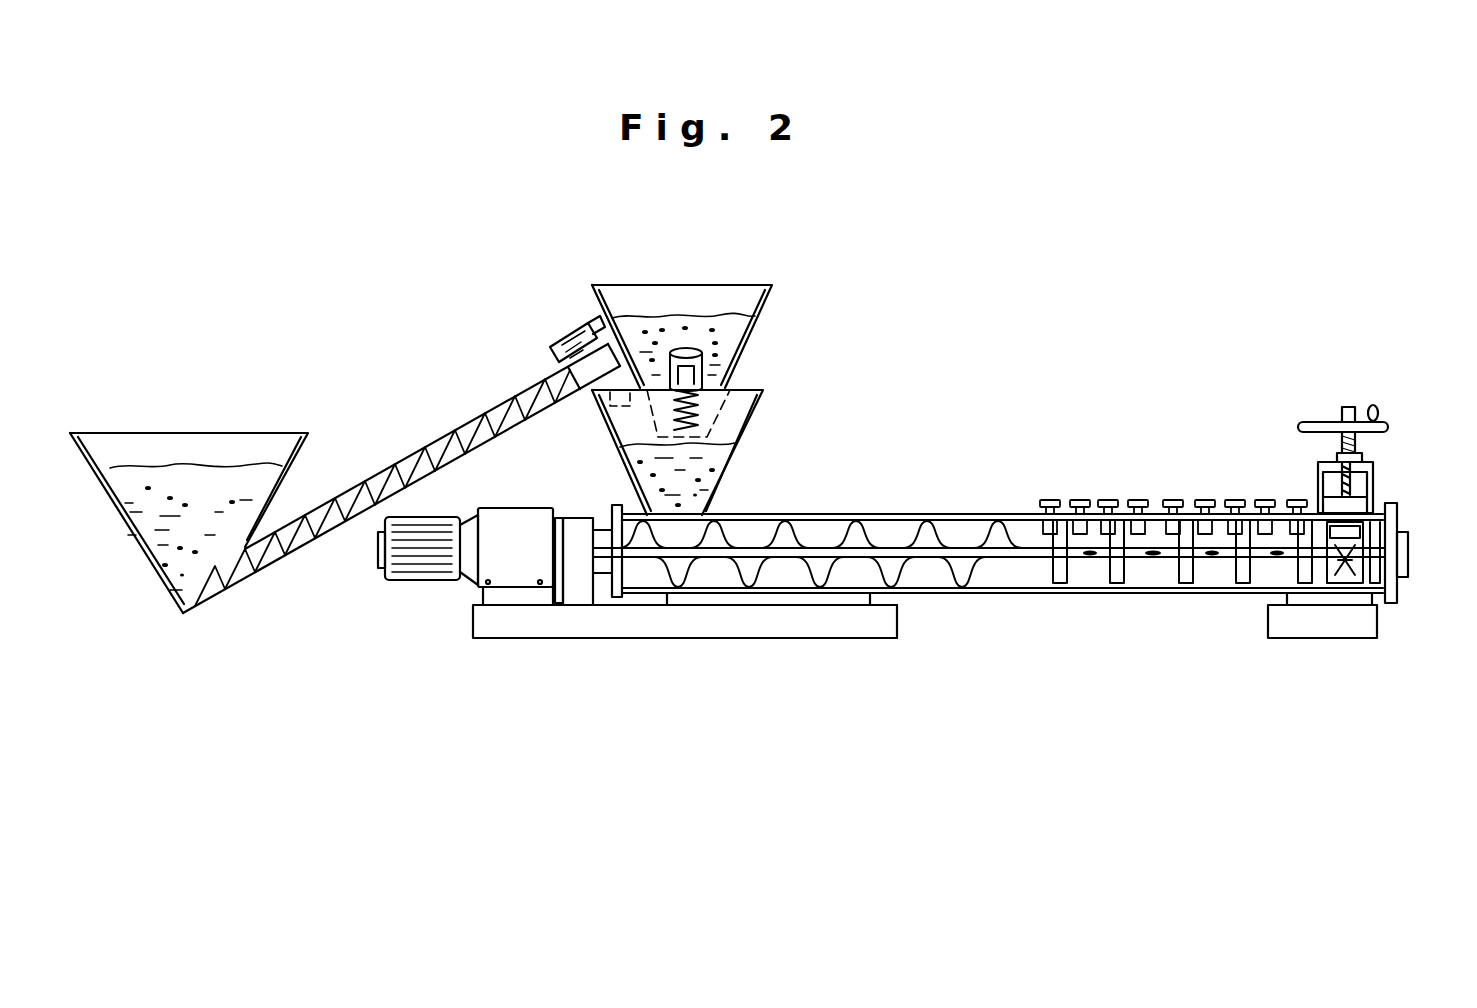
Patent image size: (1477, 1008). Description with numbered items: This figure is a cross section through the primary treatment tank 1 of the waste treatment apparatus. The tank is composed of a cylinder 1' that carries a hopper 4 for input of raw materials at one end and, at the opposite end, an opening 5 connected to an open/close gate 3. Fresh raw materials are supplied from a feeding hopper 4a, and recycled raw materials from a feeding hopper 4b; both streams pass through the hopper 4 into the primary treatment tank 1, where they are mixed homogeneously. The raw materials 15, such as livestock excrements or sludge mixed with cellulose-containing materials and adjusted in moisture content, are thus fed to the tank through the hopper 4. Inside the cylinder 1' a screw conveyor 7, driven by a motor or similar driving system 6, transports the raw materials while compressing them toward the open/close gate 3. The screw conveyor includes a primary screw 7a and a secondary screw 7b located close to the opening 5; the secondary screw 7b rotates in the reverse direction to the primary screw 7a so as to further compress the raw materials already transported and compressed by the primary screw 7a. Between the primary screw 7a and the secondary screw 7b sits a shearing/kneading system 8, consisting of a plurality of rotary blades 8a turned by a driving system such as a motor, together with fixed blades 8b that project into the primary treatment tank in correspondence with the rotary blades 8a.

The primary treatment tank 1 is at (967, 644).
The cylinder 1' is at (997, 520).
The open/close gate 3 is at (1384, 453).
The hopper 4 is at (757, 423).
The feeding hopper of the fresh raw materials 4a is at (275, 433).
The feeding hopper of the recycled raw materials 4b is at (745, 285).
The opening 5 is at (1335, 572).
The driving system 6 is at (422, 582).
The screw conveyor 7 is at (946, 566).
The primary screw 7a is at (800, 573).
The secondary screw 7b is at (1358, 562).
The shearing/kneading system 8 is at (1217, 564).
The rotary blades 8a is at (1182, 575).
The fixed blades 8b is at (1142, 500).
The raw materials 15 is at (618, 422).